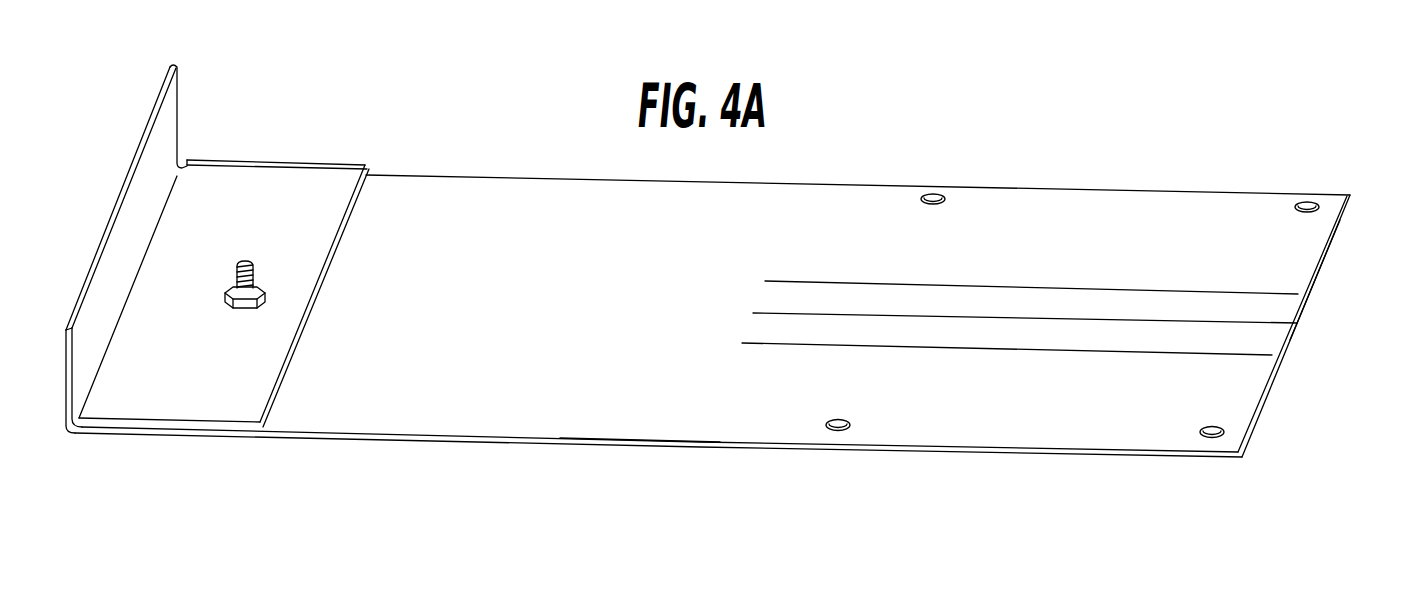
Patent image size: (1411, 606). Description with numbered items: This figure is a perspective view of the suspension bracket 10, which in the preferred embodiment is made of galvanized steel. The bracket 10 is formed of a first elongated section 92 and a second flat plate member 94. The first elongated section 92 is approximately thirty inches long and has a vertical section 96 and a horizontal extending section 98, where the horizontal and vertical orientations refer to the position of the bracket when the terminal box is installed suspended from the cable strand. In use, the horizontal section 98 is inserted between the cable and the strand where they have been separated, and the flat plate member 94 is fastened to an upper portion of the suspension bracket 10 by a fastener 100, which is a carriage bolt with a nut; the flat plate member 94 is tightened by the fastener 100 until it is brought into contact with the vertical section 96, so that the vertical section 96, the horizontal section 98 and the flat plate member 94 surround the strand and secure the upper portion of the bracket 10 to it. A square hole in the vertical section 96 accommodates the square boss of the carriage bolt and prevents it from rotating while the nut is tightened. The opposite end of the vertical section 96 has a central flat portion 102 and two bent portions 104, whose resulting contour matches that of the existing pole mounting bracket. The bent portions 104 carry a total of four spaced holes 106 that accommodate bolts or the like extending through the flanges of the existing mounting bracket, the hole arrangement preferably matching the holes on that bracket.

The suspension bracket 10 is at (468, 427).
The first elongated section 92 is at (562, 428).
The flat plate member 94 is at (287, 218).
The vertical section 96 is at (645, 428).
The horizontal extending section 98 is at (172, 113).
The fastener 100 is at (250, 308).
The central flat portion 102 is at (1297, 323).
The bent portions 104 is at (1313, 242).
The spaced holes 106 is at (938, 194).